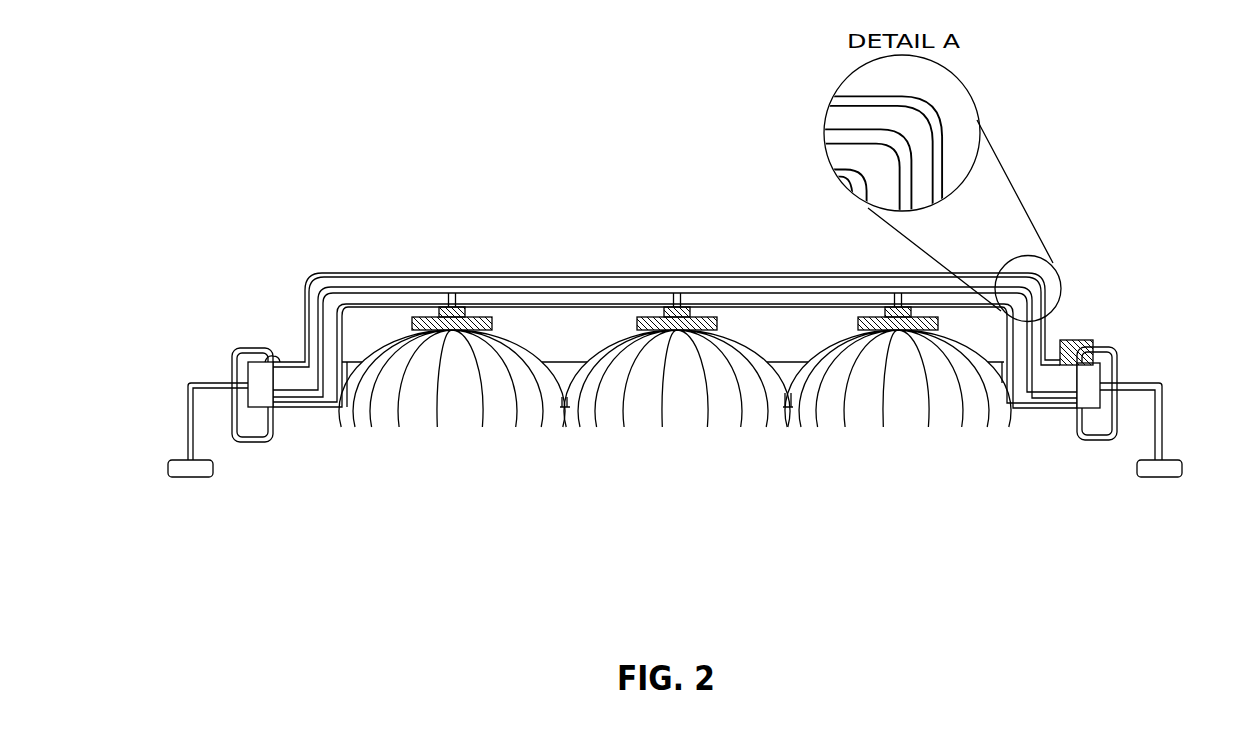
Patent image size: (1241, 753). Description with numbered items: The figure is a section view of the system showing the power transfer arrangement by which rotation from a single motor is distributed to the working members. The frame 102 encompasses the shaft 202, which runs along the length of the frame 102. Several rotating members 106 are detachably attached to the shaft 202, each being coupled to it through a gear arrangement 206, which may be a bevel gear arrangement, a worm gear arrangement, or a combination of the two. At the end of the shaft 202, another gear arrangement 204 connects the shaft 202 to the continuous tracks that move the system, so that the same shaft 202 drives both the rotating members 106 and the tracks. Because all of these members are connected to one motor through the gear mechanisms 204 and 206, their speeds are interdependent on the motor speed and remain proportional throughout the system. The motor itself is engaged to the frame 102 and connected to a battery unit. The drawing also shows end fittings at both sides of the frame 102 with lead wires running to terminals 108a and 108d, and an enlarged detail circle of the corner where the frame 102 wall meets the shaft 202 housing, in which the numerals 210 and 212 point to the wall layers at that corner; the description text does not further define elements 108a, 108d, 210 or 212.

The frame 102 is at (666, 285).
The rotating member 106 is at (724, 412).
The terminal 108a is at (217, 456).
The terminal 108d is at (1167, 456).
The shaft 202 is at (675, 309).
The gear arrangement 204 is at (515, 181).
The gear arrangement 206 is at (675, 275).
The conduit outer wall 210 is at (509, 245).
The inner conduit 212 is at (549, 274).